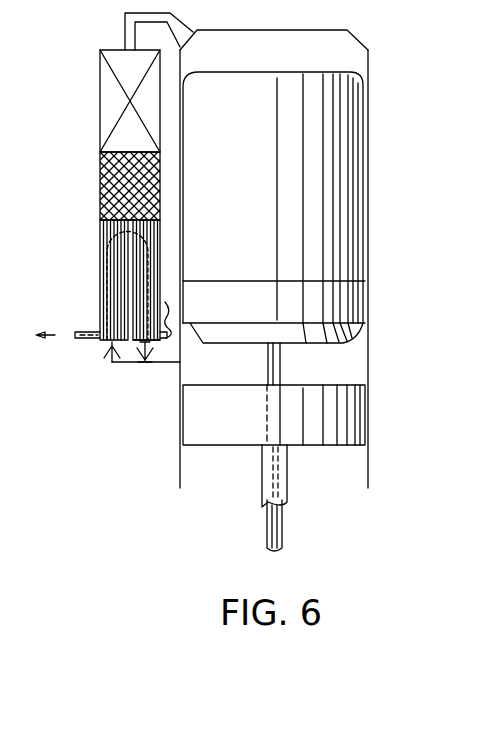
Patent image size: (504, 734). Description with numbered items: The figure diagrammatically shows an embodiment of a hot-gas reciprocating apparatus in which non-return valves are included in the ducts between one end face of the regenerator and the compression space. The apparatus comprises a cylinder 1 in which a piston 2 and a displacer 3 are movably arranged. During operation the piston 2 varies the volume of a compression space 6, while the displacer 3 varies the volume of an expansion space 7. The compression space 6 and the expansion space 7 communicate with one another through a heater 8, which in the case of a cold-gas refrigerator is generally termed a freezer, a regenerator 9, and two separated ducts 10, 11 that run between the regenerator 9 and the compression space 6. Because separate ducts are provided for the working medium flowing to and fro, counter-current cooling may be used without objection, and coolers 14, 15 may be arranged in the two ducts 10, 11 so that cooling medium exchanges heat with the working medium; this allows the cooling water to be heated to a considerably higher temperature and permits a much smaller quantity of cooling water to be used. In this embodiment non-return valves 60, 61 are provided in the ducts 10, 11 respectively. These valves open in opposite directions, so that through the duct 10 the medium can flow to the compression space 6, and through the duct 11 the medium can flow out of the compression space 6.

The cylinder 1 is at (368, 183).
The piston 2 is at (343, 418).
The displacer 3 is at (333, 122).
The compression space 6 is at (333, 360).
The expansion space 7 is at (330, 52).
The heater 8 is at (110, 103).
The regenerator 9 is at (115, 189).
The duct 10 is at (151, 348).
The duct 11 is at (120, 363).
The cooler 14 is at (147, 281).
The cooler 15 is at (113, 253).
The non-return valve 60 is at (140, 348).
The non-return valve 61 is at (106, 349).